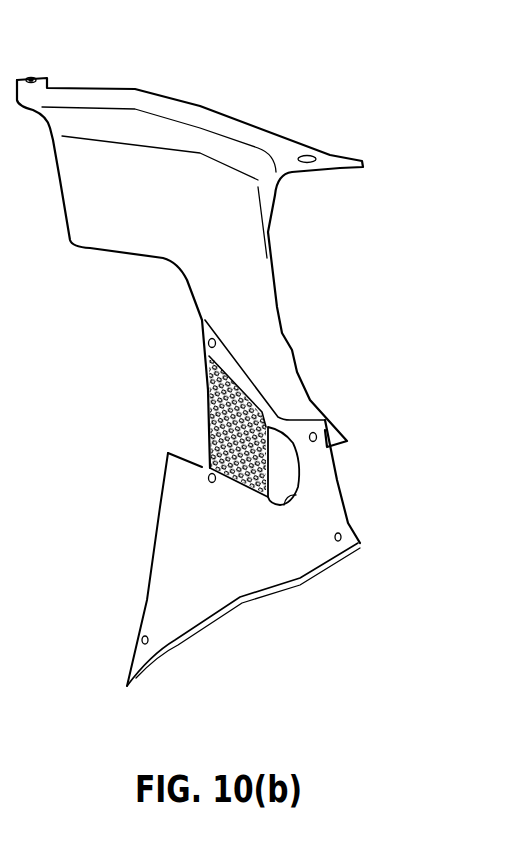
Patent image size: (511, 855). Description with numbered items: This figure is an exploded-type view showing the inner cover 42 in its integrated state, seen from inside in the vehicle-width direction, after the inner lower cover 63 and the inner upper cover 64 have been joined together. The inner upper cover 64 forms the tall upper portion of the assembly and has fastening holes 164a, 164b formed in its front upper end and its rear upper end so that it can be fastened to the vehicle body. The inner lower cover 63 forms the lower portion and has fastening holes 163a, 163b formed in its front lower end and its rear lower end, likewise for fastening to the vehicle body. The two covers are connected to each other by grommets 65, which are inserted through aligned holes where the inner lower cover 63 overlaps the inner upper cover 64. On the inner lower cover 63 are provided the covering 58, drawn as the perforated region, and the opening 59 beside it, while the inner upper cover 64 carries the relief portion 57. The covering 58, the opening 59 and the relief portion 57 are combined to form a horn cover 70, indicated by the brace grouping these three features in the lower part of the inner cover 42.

The inner cover 42 is at (243, 310).
The inner upper cover 64 is at (252, 303).
The inner lower cover 63 is at (322, 449).
The grommets 65 is at (207, 343).
The fastening hole 164a is at (308, 157).
The fastening hole 164b is at (33, 79).
The horn cover 70 is at (287, 524).
The relief portion 57 is at (290, 503).
The covering 58 is at (243, 483).
The opening 59 is at (283, 503).
The fastening hole 163a is at (340, 541).
The fastening hole 163b is at (150, 637).